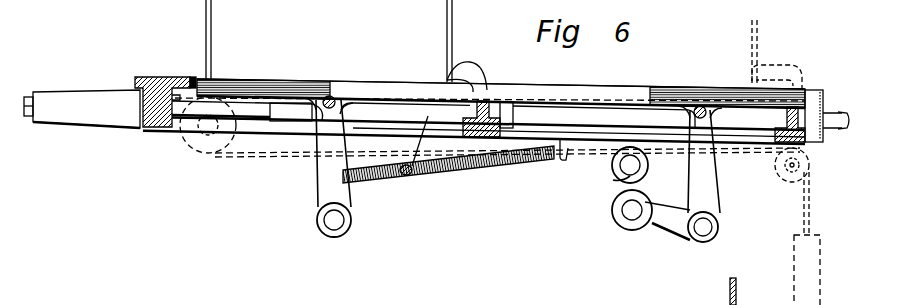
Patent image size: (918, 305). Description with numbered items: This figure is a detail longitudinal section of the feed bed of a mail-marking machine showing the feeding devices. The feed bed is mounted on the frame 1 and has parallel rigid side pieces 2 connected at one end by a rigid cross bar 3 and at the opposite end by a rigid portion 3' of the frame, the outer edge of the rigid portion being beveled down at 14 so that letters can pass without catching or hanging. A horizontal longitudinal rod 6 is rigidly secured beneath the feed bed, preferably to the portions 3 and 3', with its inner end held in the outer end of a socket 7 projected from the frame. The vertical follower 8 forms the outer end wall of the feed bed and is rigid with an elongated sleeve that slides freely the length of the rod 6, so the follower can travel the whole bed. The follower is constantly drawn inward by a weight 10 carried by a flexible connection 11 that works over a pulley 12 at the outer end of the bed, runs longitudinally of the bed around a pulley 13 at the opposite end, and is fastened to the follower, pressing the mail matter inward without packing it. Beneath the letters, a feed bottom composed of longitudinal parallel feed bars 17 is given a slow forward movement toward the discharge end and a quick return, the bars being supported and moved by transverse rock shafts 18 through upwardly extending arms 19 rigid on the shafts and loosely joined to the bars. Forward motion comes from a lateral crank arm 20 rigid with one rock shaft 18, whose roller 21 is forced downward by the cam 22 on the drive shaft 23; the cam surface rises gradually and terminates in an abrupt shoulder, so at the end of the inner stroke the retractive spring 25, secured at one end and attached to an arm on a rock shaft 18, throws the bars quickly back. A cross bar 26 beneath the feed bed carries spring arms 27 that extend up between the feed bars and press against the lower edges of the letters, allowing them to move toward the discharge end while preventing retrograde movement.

The frame 1 is at (793, 118).
The side piece 2 is at (588, 118).
The cross bar 3 is at (165, 120).
The rigid portion of the frame 3' is at (806, 141).
The horizontal longitudinal rod 6 is at (517, 144).
The socket 7 is at (82, 109).
The vertical follower 8 is at (339, 41).
The weight 10 is at (794, 278).
The flexible connection 11 is at (803, 200).
The pulley 12 is at (780, 161).
The pulley 13 is at (209, 150).
The beveled edge 14 is at (237, 97).
The feed bar 17 is at (577, 97).
The rock shaft 18 is at (703, 233).
The arm 19 is at (513, 154).
The crank arm 20 is at (675, 224).
The roller 21 is at (632, 220).
The cam 22 is at (638, 172).
The drive shaft 23 is at (629, 166).
The retractive spring 25 is at (402, 175).
The cross bar 26 is at (485, 122).
The spring arm 27 is at (460, 96).